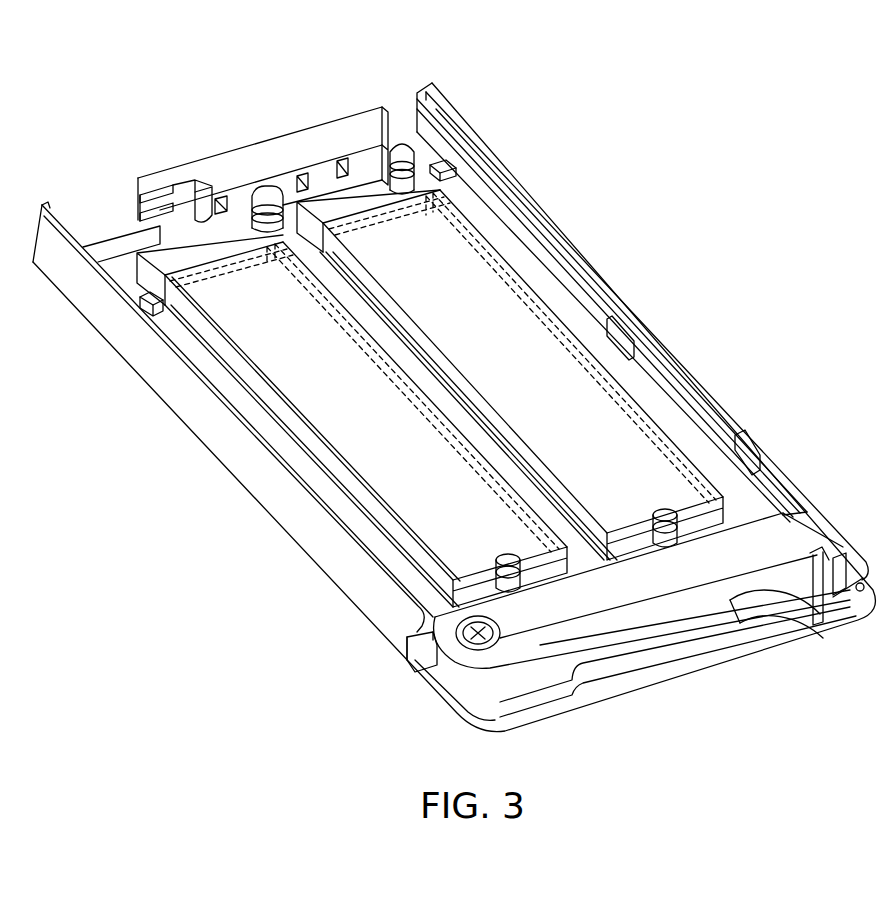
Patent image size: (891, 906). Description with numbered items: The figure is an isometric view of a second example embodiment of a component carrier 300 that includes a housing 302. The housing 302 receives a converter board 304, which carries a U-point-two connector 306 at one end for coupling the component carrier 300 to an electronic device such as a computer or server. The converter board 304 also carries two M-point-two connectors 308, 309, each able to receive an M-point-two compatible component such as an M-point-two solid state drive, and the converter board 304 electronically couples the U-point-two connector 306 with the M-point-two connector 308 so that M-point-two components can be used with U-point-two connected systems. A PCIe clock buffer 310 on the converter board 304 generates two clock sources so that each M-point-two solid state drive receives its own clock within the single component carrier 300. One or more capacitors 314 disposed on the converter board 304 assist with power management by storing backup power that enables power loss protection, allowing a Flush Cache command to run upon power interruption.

The component carrier 300 is at (767, 97).
The housing 302 is at (814, 520).
The converter board 304 is at (102, 236).
The U.2 connector 306 is at (302, 126).
The M.2 connector 308 is at (394, 188).
The M.2 connector 309 is at (227, 245).
The PCIe clock buffer 310 is at (135, 303).
The capacitors 314 is at (448, 165).